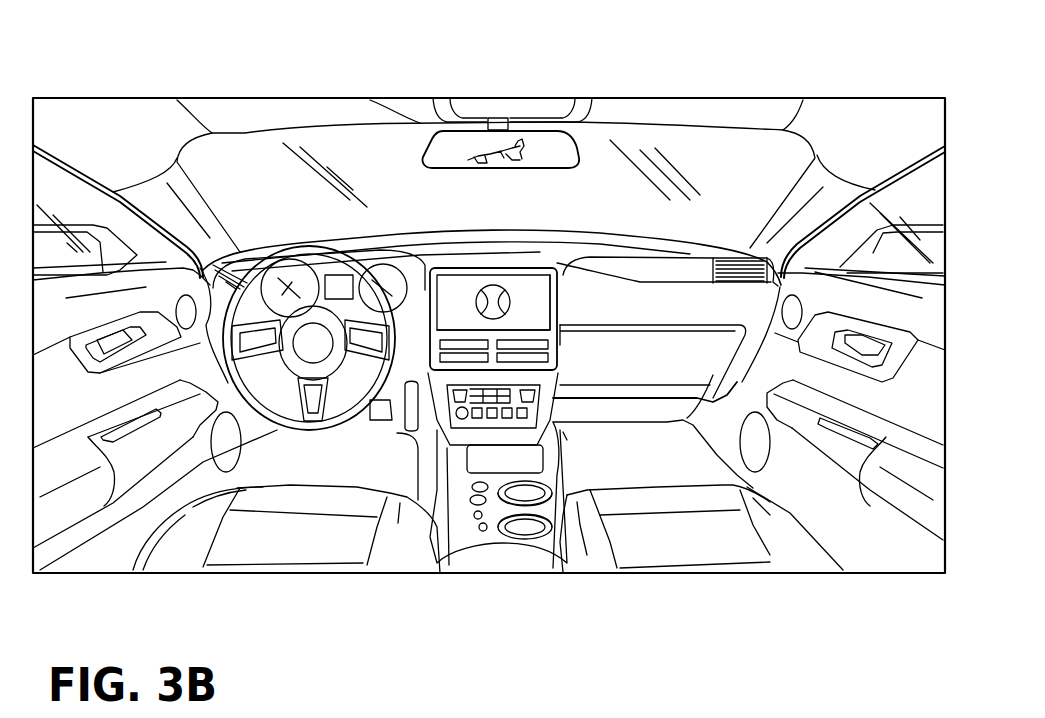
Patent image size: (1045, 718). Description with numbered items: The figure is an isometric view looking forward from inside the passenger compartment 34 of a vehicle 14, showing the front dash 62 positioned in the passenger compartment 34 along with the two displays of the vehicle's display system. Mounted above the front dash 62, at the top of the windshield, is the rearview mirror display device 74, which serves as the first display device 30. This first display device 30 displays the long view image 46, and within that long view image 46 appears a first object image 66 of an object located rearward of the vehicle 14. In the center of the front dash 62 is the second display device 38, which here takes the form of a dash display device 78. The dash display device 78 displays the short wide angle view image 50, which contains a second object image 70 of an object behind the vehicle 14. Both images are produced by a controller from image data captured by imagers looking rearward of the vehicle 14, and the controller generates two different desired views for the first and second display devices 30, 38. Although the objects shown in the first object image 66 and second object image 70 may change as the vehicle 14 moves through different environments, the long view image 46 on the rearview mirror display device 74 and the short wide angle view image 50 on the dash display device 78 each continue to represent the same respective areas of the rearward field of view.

The vehicle 14 is at (875, 140).
The passenger compartment 34 is at (365, 157).
The first display device 30 is at (575, 158).
The long view image 46 is at (535, 138).
The rearview mirror display device 74 is at (550, 143).
The first object image 66 is at (480, 152).
The front dash 62 is at (640, 268).
The short wide angle view image 50 is at (456, 282).
The second object image 70 is at (493, 290).
The dash display device 78 is at (520, 285).
The second display device 38 is at (541, 300).